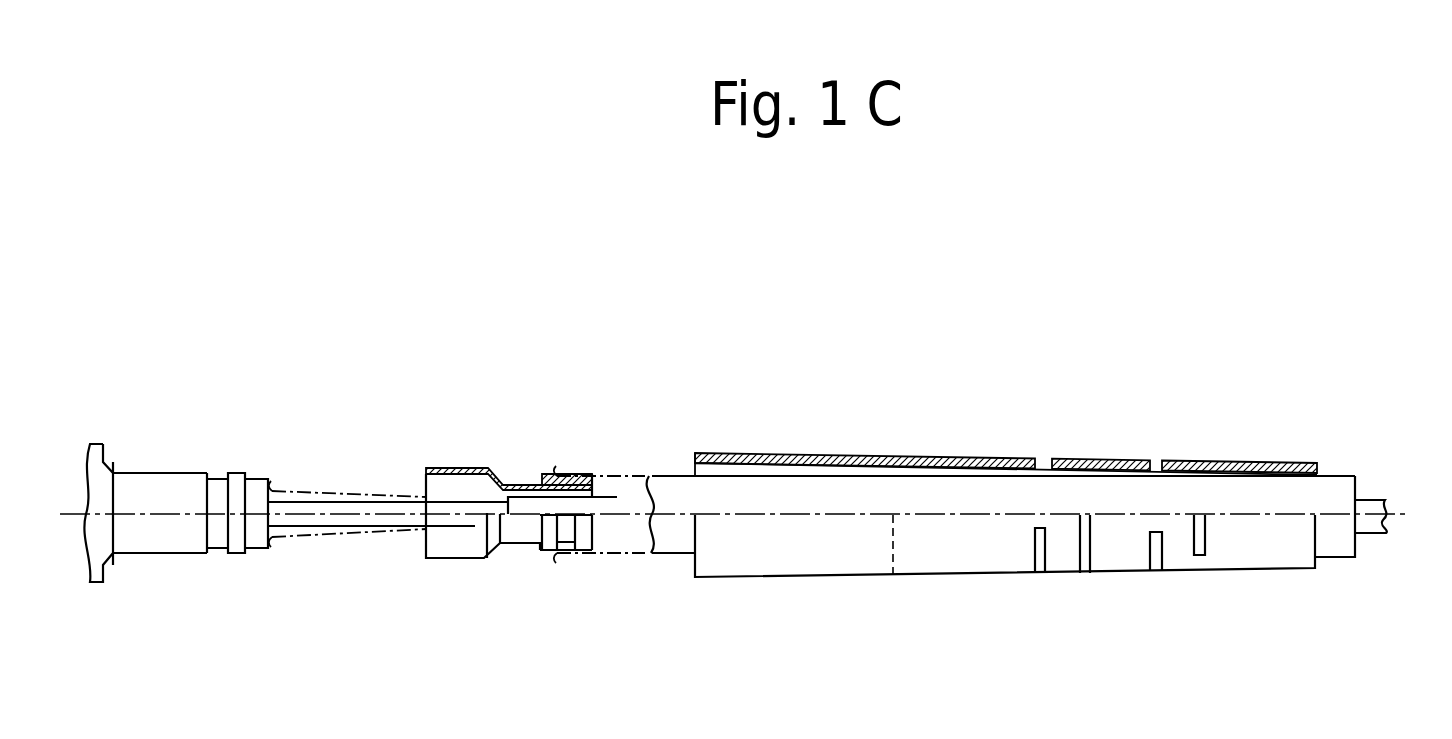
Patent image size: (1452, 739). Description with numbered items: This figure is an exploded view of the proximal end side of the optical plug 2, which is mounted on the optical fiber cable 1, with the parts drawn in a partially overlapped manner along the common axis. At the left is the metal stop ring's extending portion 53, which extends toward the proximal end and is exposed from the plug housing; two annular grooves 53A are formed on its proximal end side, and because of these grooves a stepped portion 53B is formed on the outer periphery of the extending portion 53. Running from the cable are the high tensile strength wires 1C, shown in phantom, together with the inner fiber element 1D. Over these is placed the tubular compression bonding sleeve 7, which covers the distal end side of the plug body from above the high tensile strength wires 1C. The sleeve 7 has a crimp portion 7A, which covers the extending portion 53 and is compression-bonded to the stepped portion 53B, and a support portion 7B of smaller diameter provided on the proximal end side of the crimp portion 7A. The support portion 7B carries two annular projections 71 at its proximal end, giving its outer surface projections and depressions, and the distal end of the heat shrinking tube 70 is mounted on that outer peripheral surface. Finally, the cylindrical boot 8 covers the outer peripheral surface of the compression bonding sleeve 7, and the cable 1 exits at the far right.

The optical fiber cable 1 is at (1383, 493).
The high tensile strength wires 1C is at (312, 490).
The bare optical fiber 1D is at (528, 508).
The optical plug 2 is at (1120, 418).
The compression bonding sleeve 7 is at (589, 486).
The crimp portion 7A is at (452, 470).
The support portion 7B is at (532, 485).
The boot 8 is at (938, 453).
The extending portion 53 is at (158, 473).
The annular grooves 53A is at (218, 477).
The stepped portion 53B is at (207, 555).
The heat shrinking tube 70 is at (562, 553).
The annular projections 71 is at (590, 480).